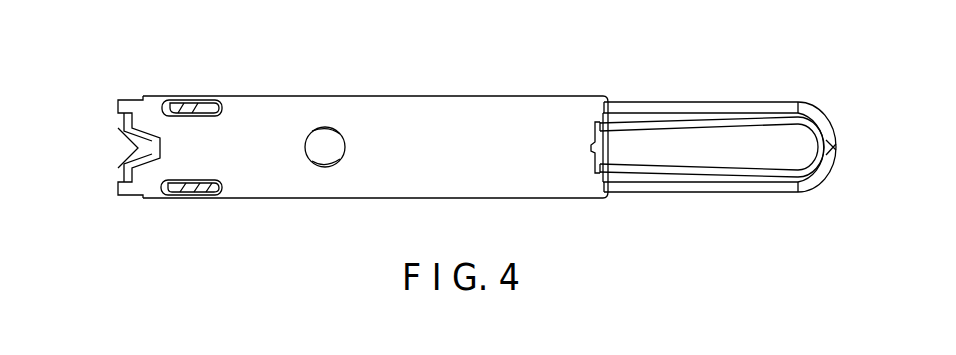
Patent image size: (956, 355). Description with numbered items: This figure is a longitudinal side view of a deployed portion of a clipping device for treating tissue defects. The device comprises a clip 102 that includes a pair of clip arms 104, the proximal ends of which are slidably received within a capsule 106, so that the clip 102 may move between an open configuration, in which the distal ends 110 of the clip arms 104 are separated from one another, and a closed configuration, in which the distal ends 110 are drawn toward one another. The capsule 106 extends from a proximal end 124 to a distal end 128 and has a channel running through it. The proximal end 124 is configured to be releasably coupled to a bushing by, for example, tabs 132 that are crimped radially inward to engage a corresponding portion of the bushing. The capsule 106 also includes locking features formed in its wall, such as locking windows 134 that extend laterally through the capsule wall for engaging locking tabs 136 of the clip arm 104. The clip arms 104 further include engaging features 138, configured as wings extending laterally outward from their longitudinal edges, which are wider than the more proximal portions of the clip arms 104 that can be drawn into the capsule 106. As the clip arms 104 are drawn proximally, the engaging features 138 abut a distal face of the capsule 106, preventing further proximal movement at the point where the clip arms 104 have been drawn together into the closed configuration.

The clip 102 is at (332, 60).
The clip arms 104 is at (761, 106).
The capsule 106 is at (436, 117).
The distal ends 110 is at (830, 172).
The proximal end 124 is at (130, 99).
The distal end 128 is at (564, 112).
The tabs 132 is at (135, 147).
The locking windows 134 is at (155, 99).
The locking tabs 136 is at (200, 99).
The engaging features 138 is at (651, 180).